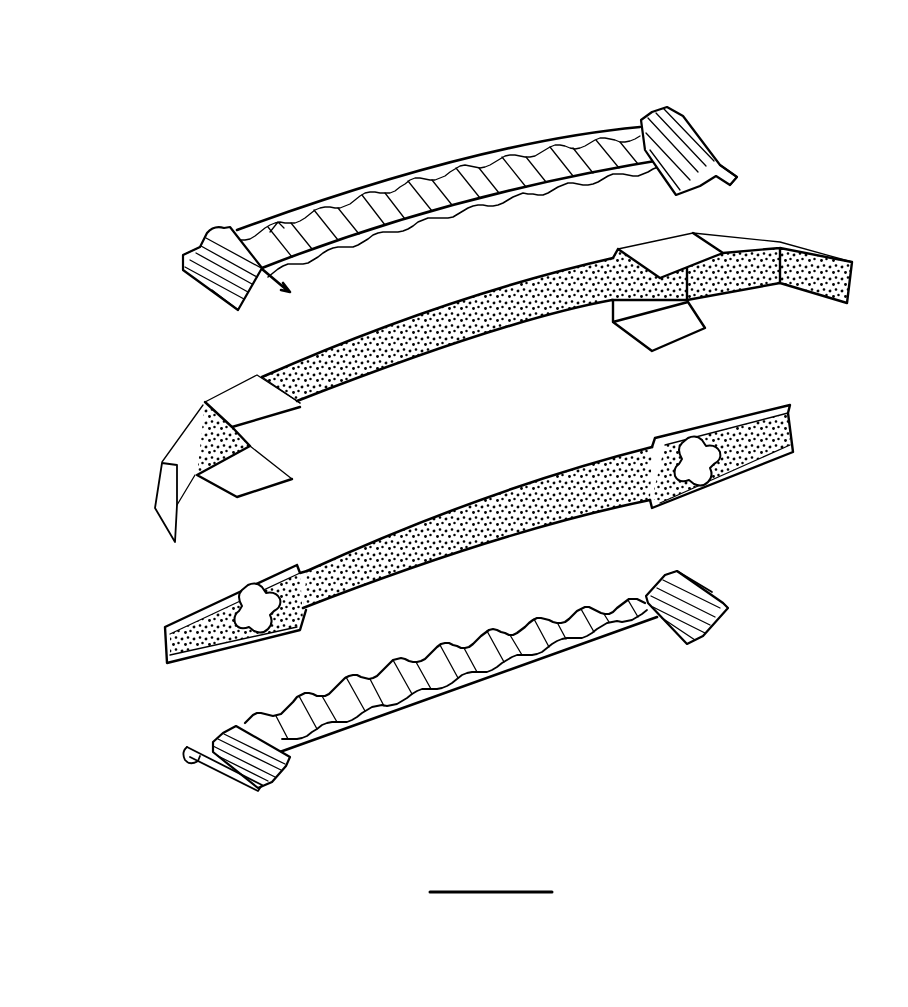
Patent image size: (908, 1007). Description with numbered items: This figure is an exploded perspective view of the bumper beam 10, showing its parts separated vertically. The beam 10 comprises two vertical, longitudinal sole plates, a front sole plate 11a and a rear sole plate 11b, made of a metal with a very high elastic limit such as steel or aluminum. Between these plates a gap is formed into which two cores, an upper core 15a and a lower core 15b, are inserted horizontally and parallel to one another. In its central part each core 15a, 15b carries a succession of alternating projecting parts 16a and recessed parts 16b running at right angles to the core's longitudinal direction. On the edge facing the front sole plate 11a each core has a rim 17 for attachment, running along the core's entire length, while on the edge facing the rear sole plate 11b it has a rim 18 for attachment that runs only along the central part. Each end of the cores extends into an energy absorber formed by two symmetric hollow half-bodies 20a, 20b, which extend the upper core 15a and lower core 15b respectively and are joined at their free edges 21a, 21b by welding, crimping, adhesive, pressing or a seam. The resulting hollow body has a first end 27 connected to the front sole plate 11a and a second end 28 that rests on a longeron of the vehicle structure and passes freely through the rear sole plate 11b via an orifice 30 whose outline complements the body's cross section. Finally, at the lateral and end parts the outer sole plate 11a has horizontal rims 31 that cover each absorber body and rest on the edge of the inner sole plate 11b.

The beam 10 is at (730, 567).
The front sole plate 11a is at (480, 297).
The rear sole plate 11b is at (487, 493).
The upper core 15a is at (492, 140).
The lower core 15b is at (520, 700).
The projecting parts 16a is at (373, 207).
The recessed parts 16b is at (433, 193).
The rim 17 is at (277, 223).
The rim 18 is at (523, 190).
The hollow half-body 20a is at (200, 243).
The hollow half-body 20b is at (263, 793).
The free edge 21a is at (200, 288).
The free edge 21b is at (225, 768).
The first end 27 is at (176, 258).
The second end 28 is at (232, 315).
The orifice 30 is at (258, 610).
The horizontal rims 31 is at (200, 427).